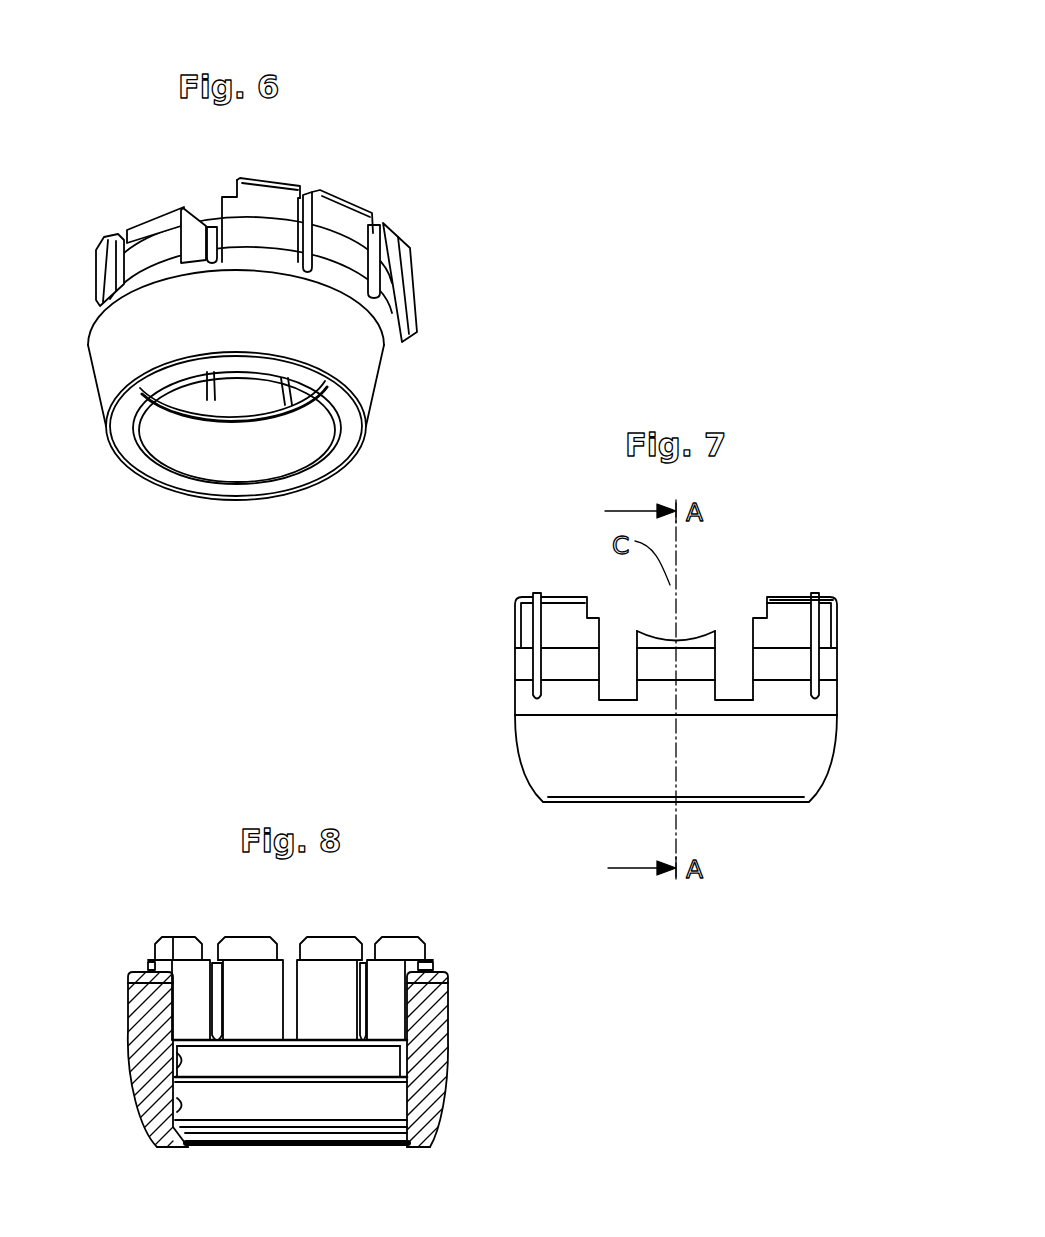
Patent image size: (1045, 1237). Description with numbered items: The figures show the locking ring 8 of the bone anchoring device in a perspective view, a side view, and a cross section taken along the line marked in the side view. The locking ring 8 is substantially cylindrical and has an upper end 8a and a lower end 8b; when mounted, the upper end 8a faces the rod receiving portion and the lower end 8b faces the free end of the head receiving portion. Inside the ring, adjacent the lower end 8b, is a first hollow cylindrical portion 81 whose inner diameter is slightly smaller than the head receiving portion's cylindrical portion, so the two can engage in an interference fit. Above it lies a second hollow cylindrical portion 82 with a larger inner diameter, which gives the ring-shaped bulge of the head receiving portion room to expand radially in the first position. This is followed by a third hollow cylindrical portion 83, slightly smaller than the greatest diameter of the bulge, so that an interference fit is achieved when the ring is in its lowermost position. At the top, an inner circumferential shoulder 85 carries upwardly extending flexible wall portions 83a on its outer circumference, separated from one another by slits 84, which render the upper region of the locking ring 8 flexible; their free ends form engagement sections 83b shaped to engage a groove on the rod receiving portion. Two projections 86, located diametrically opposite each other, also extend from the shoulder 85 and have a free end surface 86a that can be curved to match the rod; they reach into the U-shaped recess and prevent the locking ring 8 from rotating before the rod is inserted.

In FIG. 6, the locking ring 8 is at (408, 330).
In FIG. 7, the locking ring 8 is at (508, 668).
In FIG. 8, the locking ring 8 is at (464, 1034).
In FIG. 6, the upper end 8a is at (388, 222).
In FIG. 7, the upper end 8a is at (565, 599).
In FIG. 8, the upper end 8a is at (394, 935).
In FIG. 6, the lower end 8b is at (345, 492).
In FIG. 7, the lower end 8b is at (775, 805).
In FIG. 8, the lower end 8b is at (405, 1148).
In FIG. 6, the first hollow cylindrical portion 81 is at (292, 490).
In FIG. 8, the first hollow cylindrical portion 81 is at (190, 1150).
In FIG. 6, the second hollow cylindrical portion 82 is at (240, 470).
In FIG. 8, the second hollow cylindrical portion 82 is at (177, 1105).
In FIG. 6, the third hollow cylindrical portion 83 is at (200, 432).
In FIG. 8, the third hollow cylindrical portion 83 is at (178, 1060).
In FIG. 6, the flexible wall portion 83a is at (240, 222).
In FIG. 7, the flexible wall portion 83a is at (793, 618).
In FIG. 8, the flexible wall portion 83a is at (243, 975).
In FIG. 6, the engagement section 83b is at (262, 186).
In FIG. 7, the engagement section 83b is at (833, 597).
In FIG. 8, the engagement section 83b is at (225, 937).
In FIG. 6, the slit 84 is at (326, 192).
In FIG. 7, the slit 84 is at (676, 646).
In FIG. 8, the slit 84 is at (292, 1030).
In FIG. 8, the inner circumferential shoulder 85 is at (175, 1045).
In FIG. 6, the projection 86 is at (122, 250).
In FIG. 7, the projection 86 is at (660, 668).
In FIG. 6, the free end surface 86a is at (140, 232).
In FIG. 7, the free end surface 86a is at (664, 640).